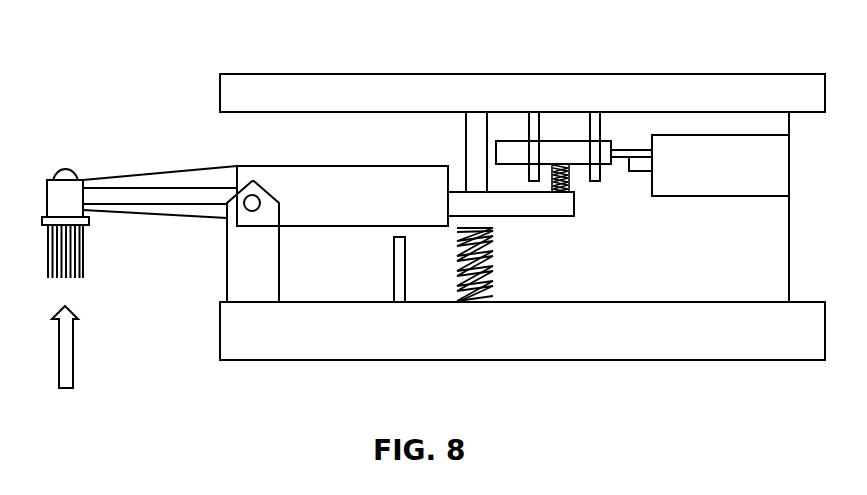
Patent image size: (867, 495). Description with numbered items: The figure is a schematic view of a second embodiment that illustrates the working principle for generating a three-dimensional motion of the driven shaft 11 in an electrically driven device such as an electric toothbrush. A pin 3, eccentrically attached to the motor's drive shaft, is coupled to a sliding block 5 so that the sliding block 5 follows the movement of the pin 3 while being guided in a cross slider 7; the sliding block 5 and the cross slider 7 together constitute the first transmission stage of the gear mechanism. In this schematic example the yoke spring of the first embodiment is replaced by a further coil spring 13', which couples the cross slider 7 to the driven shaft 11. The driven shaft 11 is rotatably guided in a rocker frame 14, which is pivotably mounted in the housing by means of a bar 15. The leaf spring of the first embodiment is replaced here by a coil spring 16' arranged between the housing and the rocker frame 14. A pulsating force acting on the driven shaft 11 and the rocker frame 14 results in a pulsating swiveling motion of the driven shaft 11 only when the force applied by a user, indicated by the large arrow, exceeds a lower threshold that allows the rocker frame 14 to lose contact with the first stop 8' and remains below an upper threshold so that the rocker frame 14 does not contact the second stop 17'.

The rocker frame 14 is at (360, 182).
The first stop 8' is at (455, 105).
The cross slider 7 is at (537, 103).
The sliding block 5 is at (597, 103).
The pin 3 is at (614, 122).
The bar 15 is at (243, 219).
The driven shaft 11 is at (527, 206).
The further coil spring 13' is at (582, 293).
The coil spring 16' is at (465, 325).
The second stop 17' is at (378, 329).